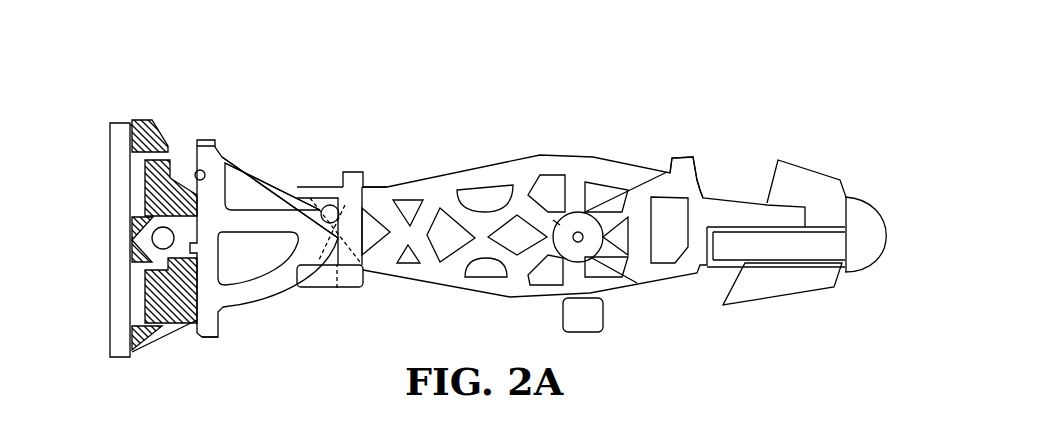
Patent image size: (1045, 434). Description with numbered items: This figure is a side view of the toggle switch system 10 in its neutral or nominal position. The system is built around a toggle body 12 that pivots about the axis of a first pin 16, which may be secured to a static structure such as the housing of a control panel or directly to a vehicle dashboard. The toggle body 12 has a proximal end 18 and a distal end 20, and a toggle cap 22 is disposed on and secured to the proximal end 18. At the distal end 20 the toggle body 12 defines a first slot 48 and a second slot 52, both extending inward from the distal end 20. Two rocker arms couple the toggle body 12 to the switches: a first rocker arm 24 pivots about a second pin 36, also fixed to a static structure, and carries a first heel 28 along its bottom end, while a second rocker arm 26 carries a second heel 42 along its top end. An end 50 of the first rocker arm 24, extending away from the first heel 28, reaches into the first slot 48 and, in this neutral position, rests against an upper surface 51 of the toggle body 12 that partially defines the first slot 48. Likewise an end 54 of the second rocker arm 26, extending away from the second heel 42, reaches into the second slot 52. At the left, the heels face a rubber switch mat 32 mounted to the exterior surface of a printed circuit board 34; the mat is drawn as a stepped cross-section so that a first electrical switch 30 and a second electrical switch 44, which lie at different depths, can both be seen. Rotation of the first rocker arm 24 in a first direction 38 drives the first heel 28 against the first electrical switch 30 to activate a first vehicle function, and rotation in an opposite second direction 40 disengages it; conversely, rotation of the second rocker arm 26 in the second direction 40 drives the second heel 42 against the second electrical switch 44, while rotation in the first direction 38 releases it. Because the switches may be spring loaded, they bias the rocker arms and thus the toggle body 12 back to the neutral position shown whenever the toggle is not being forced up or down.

The toggle switch system 10 is at (545, 62).
The toggle body 12 is at (600, 150).
The first pin 16 is at (583, 240).
The proximal end 18 is at (723, 198).
The distal end 20 is at (402, 185).
The toggle cap 22 is at (858, 198).
The first rocker arm 24 is at (250, 318).
The second rocker arm 26 is at (256, 160).
The first heel 28 is at (210, 340).
The first electrical switch 30 is at (147, 287).
The rubber switch mat 32 is at (145, 112).
The printed circuit board 34 is at (117, 182).
The second pin 36 is at (147, 193).
The first direction 38 is at (852, 340).
The second direction 40 is at (855, 370).
The second heel 42 is at (216, 146).
The second electrical switch 44 is at (118, 124).
The first slot 48 is at (323, 205).
The end of the first rocker arm 50 is at (283, 213).
The upper surface 51 is at (356, 172).
The second slot 52 is at (337, 288).
The end of the second rocker arm 54 is at (367, 277).